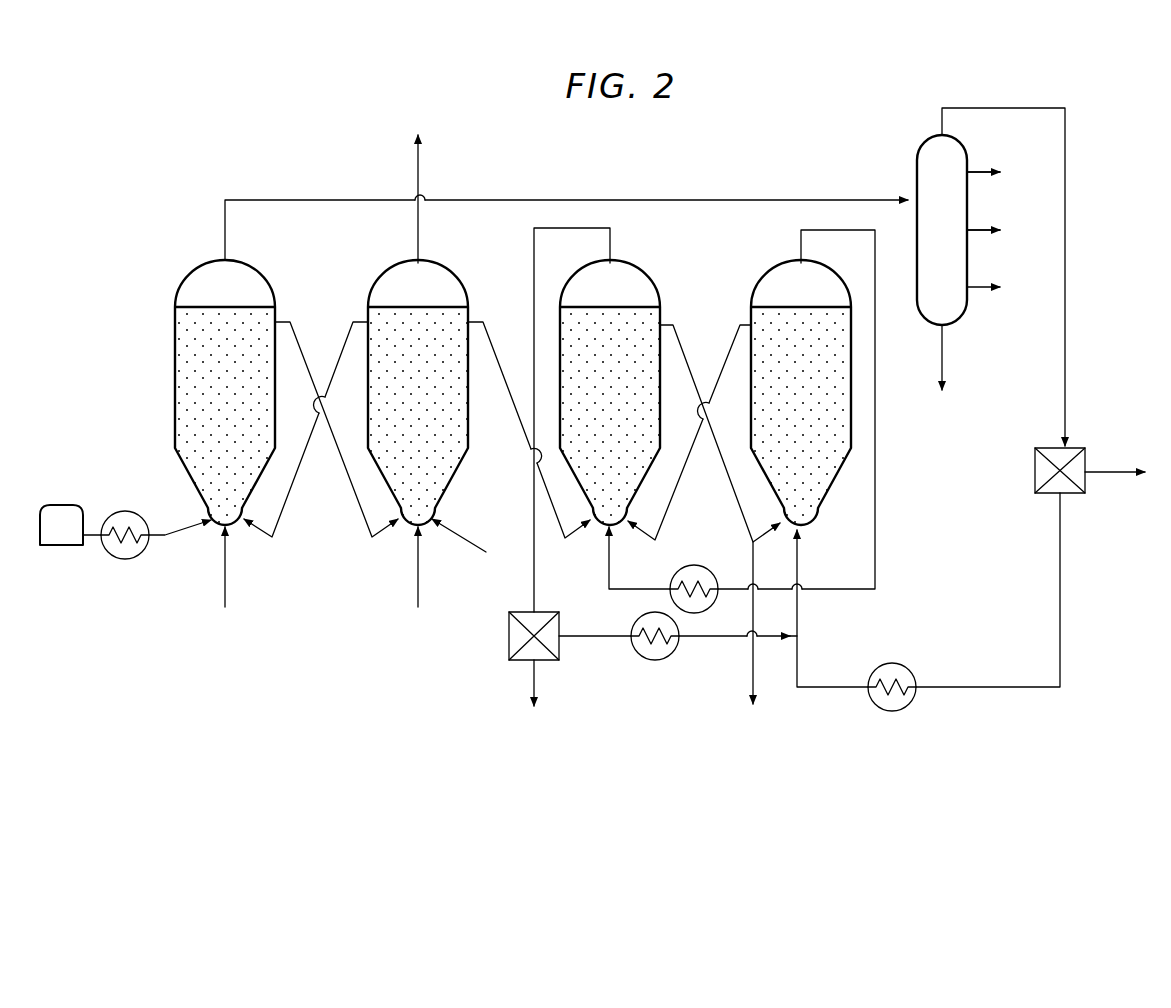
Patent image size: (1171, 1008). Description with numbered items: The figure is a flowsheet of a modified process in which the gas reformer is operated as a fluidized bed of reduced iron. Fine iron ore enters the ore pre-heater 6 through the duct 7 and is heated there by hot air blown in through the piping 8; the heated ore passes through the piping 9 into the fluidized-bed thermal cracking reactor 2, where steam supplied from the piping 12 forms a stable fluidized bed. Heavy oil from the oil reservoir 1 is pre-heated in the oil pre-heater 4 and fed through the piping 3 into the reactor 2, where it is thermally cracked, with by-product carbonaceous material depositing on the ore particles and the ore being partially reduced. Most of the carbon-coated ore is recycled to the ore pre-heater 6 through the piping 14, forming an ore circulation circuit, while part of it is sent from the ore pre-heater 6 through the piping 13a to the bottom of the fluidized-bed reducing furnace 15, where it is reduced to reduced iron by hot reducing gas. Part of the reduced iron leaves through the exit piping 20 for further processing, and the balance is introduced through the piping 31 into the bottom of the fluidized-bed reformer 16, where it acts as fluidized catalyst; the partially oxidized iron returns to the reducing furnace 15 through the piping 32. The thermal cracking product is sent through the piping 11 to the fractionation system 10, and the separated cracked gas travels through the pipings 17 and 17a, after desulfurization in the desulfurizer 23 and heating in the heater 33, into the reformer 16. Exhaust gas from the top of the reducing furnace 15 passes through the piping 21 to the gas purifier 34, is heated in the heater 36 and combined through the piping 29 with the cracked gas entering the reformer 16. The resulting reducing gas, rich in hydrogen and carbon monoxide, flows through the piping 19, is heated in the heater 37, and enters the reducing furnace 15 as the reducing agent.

The oil reservoir 1 is at (68, 543).
The fluidized-bed thermal cracking reactor 2 is at (262, 273).
The piping 3 is at (172, 537).
The oil pre-heater 4 is at (128, 512).
The ore pre-heater 6 is at (452, 276).
The duct 7 is at (486, 553).
The piping 8 is at (418, 590).
The piping 9 is at (290, 488).
The fractionation system 10 is at (916, 160).
The piping 11 is at (650, 200).
The piping 12 is at (225, 585).
The piping 13a is at (512, 410).
The piping 14 is at (305, 370).
The fluidized-bed reducing furnace 15 is at (648, 279).
The fluidized-bed reformer 16 is at (762, 286).
The piping 17 is at (1066, 163).
The piping 17a is at (1062, 627).
The piping 19 is at (877, 418).
The exit piping 20 is at (755, 672).
The piping 21 is at (568, 228).
The desulfurizer 23 is at (1087, 490).
The piping 29 is at (720, 640).
The piping 31 is at (757, 535).
The piping 32 is at (727, 350).
The heater 33 is at (894, 662).
The gas purifier 34 is at (509, 637).
The heater 36 is at (656, 661).
The heater 37 is at (695, 565).